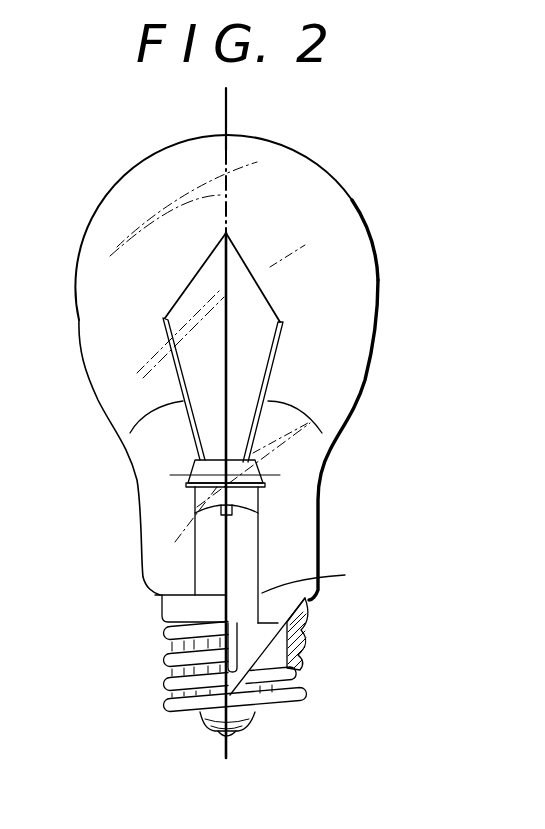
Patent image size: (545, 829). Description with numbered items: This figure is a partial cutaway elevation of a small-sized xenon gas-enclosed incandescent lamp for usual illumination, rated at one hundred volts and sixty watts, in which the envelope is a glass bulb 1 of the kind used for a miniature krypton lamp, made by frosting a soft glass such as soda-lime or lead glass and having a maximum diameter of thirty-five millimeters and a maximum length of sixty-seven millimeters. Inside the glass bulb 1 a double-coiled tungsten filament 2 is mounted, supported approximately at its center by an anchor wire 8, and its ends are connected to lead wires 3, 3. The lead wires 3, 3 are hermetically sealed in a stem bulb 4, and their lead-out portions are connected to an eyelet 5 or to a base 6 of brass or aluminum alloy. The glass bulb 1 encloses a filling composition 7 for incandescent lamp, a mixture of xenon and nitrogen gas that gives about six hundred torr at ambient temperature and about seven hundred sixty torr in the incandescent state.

The glass bulb 1 is at (375, 355).
The filament 2 is at (200, 270).
The lead wire 3 is at (178, 400).
The stem bulb 4 is at (264, 628).
The eyelet 5 is at (233, 733).
The base 6 is at (160, 650).
The filling composition for incandescent lamp 7 is at (335, 222).
The anchor wire 8 is at (227, 367).